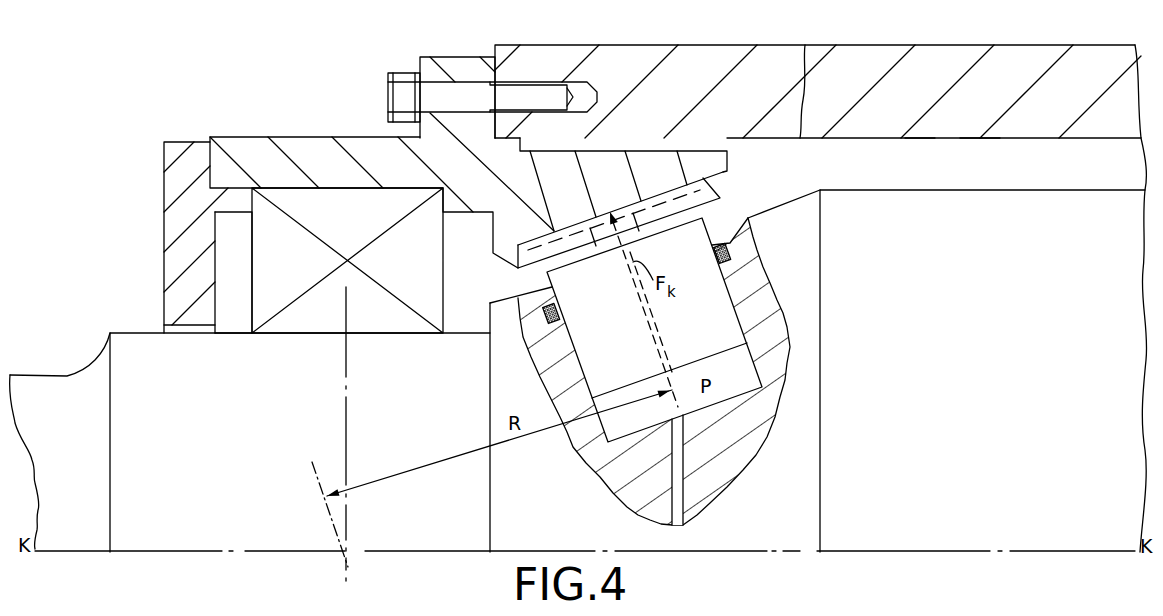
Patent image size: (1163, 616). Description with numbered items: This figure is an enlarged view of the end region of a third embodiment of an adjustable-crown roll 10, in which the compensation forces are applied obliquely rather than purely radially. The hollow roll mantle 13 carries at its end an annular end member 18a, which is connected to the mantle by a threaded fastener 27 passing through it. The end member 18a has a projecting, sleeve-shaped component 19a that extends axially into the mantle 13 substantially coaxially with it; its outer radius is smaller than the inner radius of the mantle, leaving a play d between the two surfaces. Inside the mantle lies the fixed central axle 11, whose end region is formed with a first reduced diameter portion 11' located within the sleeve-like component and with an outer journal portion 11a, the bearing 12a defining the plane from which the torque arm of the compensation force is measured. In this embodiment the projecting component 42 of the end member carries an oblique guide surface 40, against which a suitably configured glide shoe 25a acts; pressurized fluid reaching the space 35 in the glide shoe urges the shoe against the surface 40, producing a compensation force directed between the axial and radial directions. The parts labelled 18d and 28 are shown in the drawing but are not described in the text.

The adjustable-crown roll 10 is at (675, 151).
The fixed central axle 11 is at (818, 326).
The outer journal portion 11a is at (93, 540).
The first reduced diameter portion 11' is at (351, 440).
The bearing 12a is at (262, 297).
The hollow roll mantle 13 is at (687, 60).
The annular end member 18a is at (458, 70).
The clamp flange 18d is at (294, 150).
The sleeve-shaped component 19a is at (727, 127).
The glide shoe 25a is at (900, 138).
The threaded fastener 27 is at (398, 78).
The retaining ring 28 is at (170, 236).
The space in the glide shoe 35 is at (981, 138).
The oblique guide surface 40 is at (517, 262).
The projecting component 42 is at (512, 222).
The play d is at (805, 45).